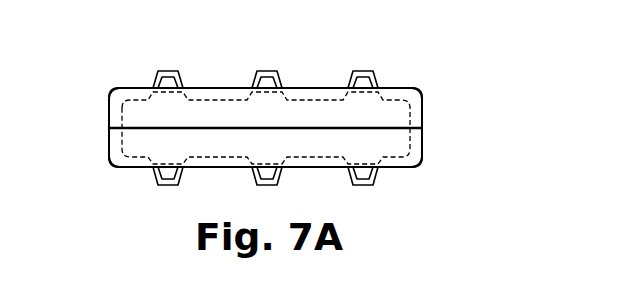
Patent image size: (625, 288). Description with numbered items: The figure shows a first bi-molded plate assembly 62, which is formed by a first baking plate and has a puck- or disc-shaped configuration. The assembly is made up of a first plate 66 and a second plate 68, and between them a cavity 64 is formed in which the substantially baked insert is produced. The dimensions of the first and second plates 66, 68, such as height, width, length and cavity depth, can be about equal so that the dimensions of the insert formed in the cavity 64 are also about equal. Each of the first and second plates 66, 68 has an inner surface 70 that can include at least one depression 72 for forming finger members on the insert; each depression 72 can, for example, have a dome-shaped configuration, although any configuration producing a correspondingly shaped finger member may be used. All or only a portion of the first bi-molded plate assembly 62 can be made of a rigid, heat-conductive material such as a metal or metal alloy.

The first bi-molded plate assembly 62 is at (438, 49).
The cavity 64 is at (228, 103).
The first plate 66 is at (443, 87).
The second plate 68 is at (95, 167).
The inner surface 70 is at (292, 100).
The depression 72 is at (376, 140).